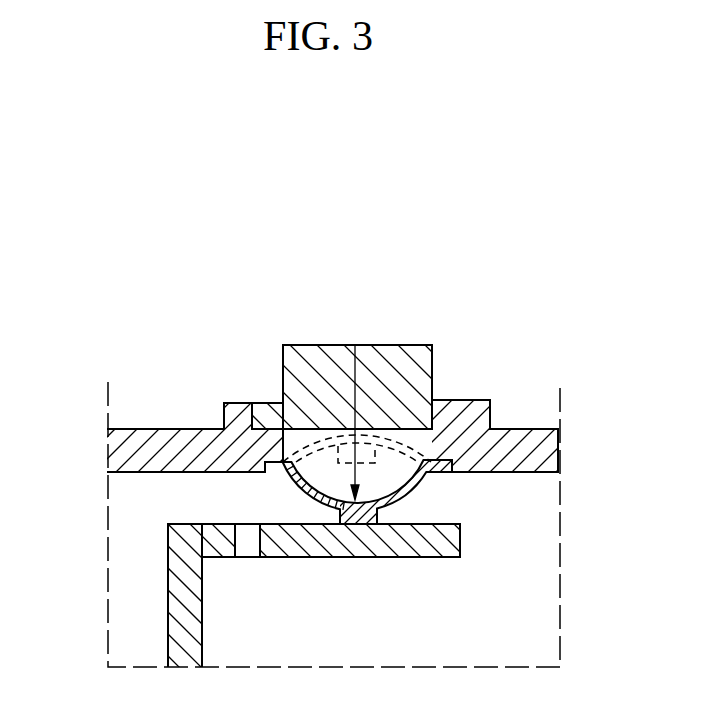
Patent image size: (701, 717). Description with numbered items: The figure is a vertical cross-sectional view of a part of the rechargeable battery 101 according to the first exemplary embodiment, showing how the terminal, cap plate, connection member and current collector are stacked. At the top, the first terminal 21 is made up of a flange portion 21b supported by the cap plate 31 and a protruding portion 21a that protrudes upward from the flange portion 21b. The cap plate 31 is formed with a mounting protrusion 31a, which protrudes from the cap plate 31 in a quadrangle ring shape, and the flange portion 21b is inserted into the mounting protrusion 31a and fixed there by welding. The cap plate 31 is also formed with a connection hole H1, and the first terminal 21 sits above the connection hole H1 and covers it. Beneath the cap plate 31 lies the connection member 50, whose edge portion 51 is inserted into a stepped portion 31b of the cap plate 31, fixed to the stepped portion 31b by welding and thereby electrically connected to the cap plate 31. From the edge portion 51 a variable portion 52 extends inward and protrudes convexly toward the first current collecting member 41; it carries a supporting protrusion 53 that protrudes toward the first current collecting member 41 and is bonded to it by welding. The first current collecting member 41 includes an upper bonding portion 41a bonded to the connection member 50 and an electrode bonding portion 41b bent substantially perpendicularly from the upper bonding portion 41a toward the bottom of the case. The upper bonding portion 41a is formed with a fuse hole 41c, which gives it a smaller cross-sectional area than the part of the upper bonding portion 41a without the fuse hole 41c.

The rechargeable battery 101 is at (350, 170).
The first terminal 21 is at (367, 345).
The protruding portion 21a is at (283, 373).
The flange portion 21b is at (267, 402).
The cap plate 31 is at (525, 443).
The mounting protrusion 31a is at (478, 413).
The stepped portion 31b is at (277, 474).
The first current collecting member 41 is at (305, 595).
The upper bonding portion 41a is at (318, 543).
The electrode bonding portion 41b is at (181, 611).
The fuse hole 41c is at (248, 558).
The connection member 50 is at (354, 428).
The edge portion 51 is at (448, 471).
The variable portion 52 is at (437, 487).
The supporting protrusion 53 is at (362, 514).
The connection hole H1 is at (428, 440).